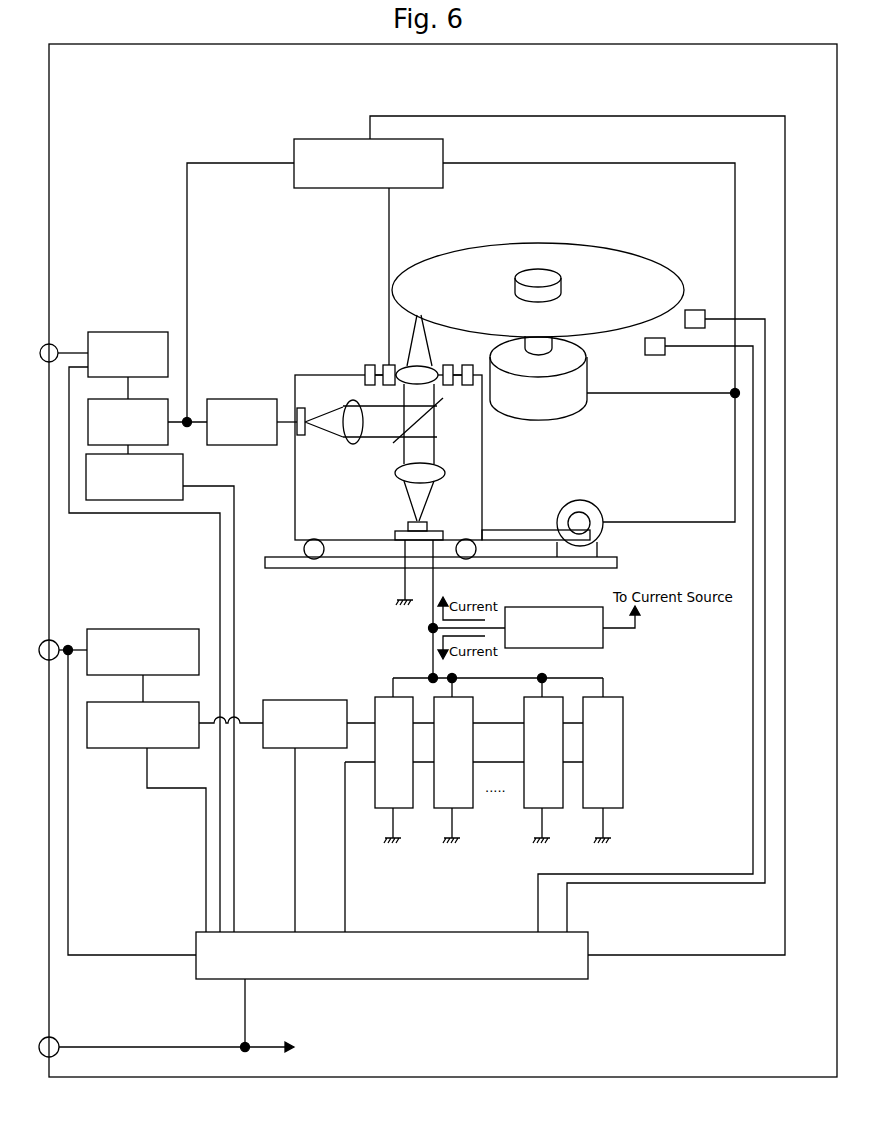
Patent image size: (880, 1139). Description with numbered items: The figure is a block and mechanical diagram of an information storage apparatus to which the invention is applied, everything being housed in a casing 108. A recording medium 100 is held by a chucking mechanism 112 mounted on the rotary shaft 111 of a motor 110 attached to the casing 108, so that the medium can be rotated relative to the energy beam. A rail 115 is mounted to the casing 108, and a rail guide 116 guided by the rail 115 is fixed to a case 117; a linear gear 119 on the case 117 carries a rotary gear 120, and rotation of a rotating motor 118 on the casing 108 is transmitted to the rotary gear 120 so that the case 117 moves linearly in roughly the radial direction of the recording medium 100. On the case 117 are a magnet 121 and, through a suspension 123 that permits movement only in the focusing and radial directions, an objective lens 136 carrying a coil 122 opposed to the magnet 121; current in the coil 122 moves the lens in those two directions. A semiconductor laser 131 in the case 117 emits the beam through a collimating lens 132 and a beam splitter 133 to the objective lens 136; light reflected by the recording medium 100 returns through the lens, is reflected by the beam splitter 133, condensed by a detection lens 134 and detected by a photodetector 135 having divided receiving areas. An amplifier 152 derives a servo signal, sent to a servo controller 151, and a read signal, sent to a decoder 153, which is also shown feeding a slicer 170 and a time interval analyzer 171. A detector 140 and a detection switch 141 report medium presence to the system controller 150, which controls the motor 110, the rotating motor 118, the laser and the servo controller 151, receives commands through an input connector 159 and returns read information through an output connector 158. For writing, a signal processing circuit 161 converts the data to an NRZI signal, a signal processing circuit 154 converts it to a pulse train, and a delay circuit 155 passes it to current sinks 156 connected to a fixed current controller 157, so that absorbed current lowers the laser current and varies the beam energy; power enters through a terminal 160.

The recording medium 100 is at (520, 255).
The casing 108 is at (480, 1077).
The motor 110 is at (565, 408).
The rotary shaft 111 is at (548, 340).
The chucking mechanism 112 is at (548, 277).
The rail 115 is at (618, 560).
The rail guide 116 is at (312, 560).
The case 117 is at (295, 478).
The rotating motor 118 is at (597, 505).
The linear gear 119 is at (505, 530).
The rotary gear 120 is at (577, 512).
The magnet 121 is at (370, 365).
The coil 122 is at (390, 365).
The suspension 123 is at (383, 365).
The semiconductor laser 131 is at (408, 525).
The collimating lens 132 is at (396, 474).
The beam splitter 133 is at (440, 407).
The detection lens 134 is at (355, 440).
The photodetector 135 is at (302, 408).
The objective lens 136 is at (427, 372).
The detector 140 is at (652, 338).
The detection switch 141 is at (700, 310).
The system controller 150 is at (445, 932).
The servo controller 151 is at (310, 139).
The amplifier 152 is at (222, 399).
The decoder 153 is at (120, 332).
The signal processing circuit 154 is at (120, 749).
The timing controller or delay circuit 155 is at (300, 700).
The current sink 156 is at (378, 810).
The constant or fixed current controller 157 is at (603, 645).
The output connector 158 is at (52, 344).
The input connector 159 is at (52, 640).
The terminal 160 is at (52, 1037).
The signal processing circuit 161 is at (150, 629).
The slicer 170 is at (88, 435).
The time interval analyzer 171 is at (86, 490).